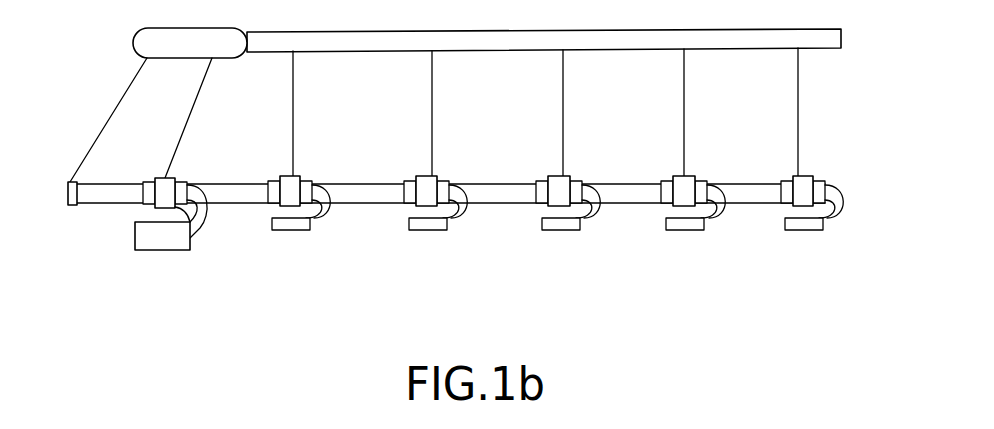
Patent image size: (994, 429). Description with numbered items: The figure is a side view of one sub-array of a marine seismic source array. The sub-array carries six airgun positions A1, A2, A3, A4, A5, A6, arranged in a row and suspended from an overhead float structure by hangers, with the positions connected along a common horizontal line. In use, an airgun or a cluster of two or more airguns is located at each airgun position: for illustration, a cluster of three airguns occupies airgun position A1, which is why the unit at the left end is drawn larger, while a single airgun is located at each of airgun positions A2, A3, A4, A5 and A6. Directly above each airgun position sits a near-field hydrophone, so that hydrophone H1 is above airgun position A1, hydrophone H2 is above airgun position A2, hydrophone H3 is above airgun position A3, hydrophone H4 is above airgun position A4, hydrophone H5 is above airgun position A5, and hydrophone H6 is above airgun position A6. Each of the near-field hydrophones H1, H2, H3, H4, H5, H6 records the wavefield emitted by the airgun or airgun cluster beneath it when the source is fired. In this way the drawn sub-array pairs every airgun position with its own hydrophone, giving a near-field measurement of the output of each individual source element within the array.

The near-field hydrophone H1 is at (166, 178).
The near-field hydrophone H2 is at (299, 176).
The near-field hydrophone H3 is at (434, 176).
The near-field hydrophone H4 is at (568, 176).
The near-field hydrophone H5 is at (688, 176).
The near-field hydrophone H6 is at (806, 176).
The airgun position A1 is at (172, 250).
The airgun position A2 is at (292, 231).
The airgun position A3 is at (428, 231).
The airgun position A4 is at (561, 231).
The airgun position A5 is at (683, 231).
The airgun position A6 is at (803, 231).